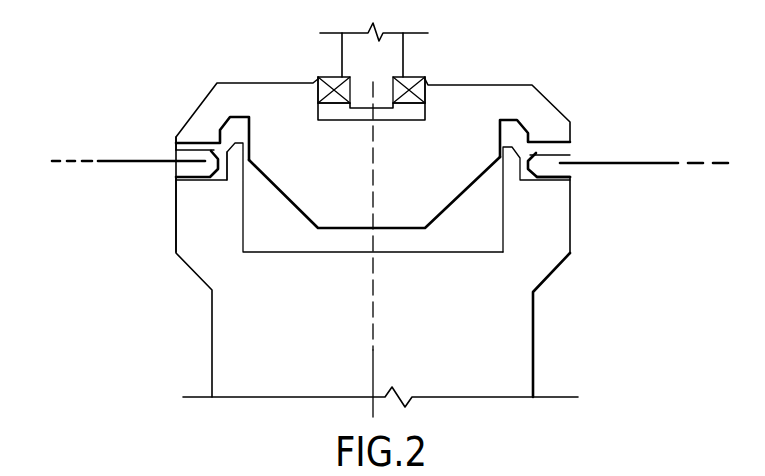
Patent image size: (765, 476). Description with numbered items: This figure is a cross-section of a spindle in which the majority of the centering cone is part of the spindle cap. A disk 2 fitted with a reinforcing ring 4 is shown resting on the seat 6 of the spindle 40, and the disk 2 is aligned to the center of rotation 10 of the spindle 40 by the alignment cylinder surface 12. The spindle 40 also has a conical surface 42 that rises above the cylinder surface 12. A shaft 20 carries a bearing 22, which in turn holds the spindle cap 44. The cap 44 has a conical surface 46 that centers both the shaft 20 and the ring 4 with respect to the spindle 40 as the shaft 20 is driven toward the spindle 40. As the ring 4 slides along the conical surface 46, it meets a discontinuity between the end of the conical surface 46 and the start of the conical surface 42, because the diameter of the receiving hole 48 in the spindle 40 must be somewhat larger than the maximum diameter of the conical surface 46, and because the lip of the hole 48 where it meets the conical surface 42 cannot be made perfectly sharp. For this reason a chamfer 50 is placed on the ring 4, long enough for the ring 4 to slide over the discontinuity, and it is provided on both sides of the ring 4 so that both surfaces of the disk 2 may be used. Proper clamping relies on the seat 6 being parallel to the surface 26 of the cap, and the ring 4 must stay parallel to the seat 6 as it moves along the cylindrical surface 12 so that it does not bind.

The disk 2 is at (634, 158).
The reinforcing ring 4 is at (574, 154).
The seat 6 is at (541, 184).
The center of rotation 10 is at (377, 350).
The alignment cylinder surface 12 is at (517, 165).
The shaft 20 is at (407, 60).
The bearing 22 is at (416, 72).
The surface 26 is at (189, 138).
The spindle 40 is at (538, 333).
The conical surface 42 is at (234, 157).
The spindle cap 44 is at (504, 80).
The conical surface 46 is at (279, 185).
The receiving hole 48 is at (239, 225).
The chamfer 50 is at (208, 157).